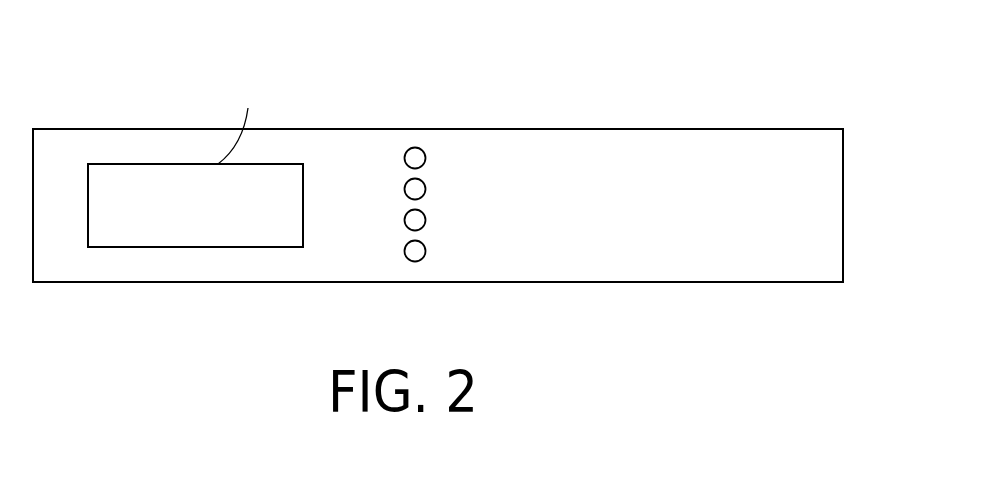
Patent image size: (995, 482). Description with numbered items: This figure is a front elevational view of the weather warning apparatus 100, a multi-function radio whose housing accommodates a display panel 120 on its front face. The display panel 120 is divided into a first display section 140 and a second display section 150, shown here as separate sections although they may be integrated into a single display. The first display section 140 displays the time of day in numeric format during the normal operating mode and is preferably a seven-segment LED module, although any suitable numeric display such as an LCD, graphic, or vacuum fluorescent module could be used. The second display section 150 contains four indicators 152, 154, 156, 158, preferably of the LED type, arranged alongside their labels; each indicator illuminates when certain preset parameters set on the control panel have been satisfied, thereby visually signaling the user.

The weather warning apparatus 100 is at (803, 46).
The display panel 120 is at (137, 120).
The first display section 140 is at (144, 262).
The second display section 150 is at (420, 72).
The indicator 152 is at (425, 153).
The indicator 154 is at (405, 185).
The indicator 156 is at (405, 222).
The indicator 158 is at (413, 262).